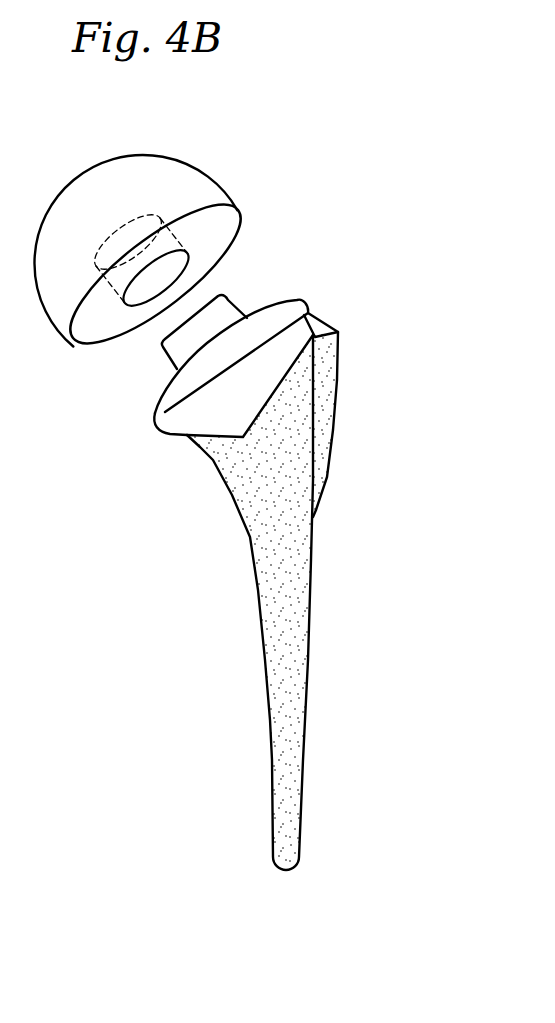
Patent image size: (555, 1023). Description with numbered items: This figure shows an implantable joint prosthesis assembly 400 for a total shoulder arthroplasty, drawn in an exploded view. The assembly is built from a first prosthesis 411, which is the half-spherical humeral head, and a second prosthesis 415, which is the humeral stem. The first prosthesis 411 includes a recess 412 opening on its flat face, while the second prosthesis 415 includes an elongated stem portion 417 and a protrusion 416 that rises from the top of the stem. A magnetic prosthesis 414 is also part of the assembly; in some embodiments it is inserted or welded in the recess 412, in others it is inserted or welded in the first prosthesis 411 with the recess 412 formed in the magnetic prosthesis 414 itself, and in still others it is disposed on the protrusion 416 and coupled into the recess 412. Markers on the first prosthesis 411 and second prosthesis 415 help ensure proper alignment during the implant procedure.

The joint prosthesis assembly 400 is at (323, 117).
The first prosthesis 411 is at (209, 140).
The recess 412 is at (137, 305).
The magnetic prosthesis 414 is at (186, 270).
The second prosthesis 415 is at (335, 540).
The protrusion 416 is at (177, 366).
The stem portion 417 is at (265, 512).